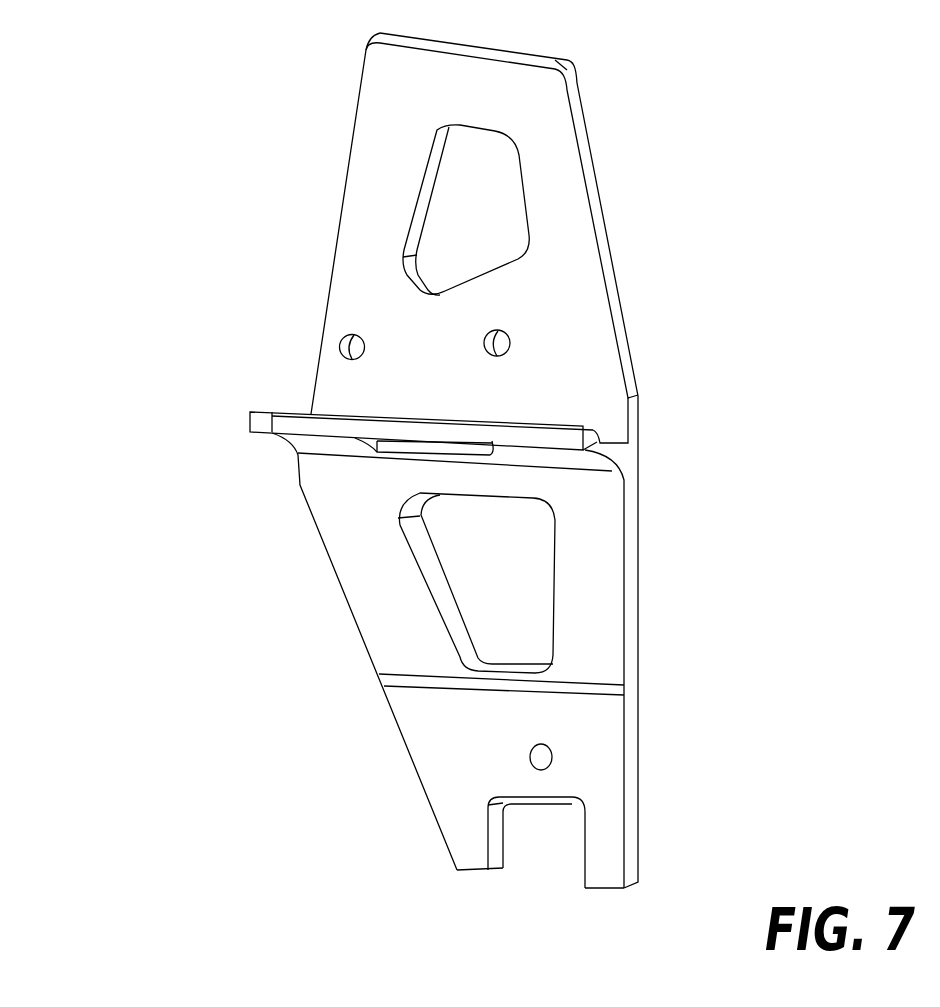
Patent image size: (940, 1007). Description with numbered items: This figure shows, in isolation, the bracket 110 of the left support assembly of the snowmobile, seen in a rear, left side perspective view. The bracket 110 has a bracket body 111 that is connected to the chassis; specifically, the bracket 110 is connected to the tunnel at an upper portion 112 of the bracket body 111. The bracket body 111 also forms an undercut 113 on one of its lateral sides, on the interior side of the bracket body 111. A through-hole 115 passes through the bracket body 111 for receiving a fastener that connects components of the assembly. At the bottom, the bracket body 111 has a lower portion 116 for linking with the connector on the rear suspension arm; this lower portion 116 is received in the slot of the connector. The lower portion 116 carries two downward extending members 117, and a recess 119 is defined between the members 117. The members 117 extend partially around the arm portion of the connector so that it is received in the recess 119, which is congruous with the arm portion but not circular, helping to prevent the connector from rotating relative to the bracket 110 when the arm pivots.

The bracket 110 is at (86, 304).
The bracket body 111 is at (630, 570).
The upper portion 112 is at (651, 323).
The undercut 113 is at (651, 703).
The through-hole 115 is at (496, 756).
The lower portion 116 is at (284, 790).
The downward extending members 117 is at (430, 867).
The recess 119 is at (537, 846).